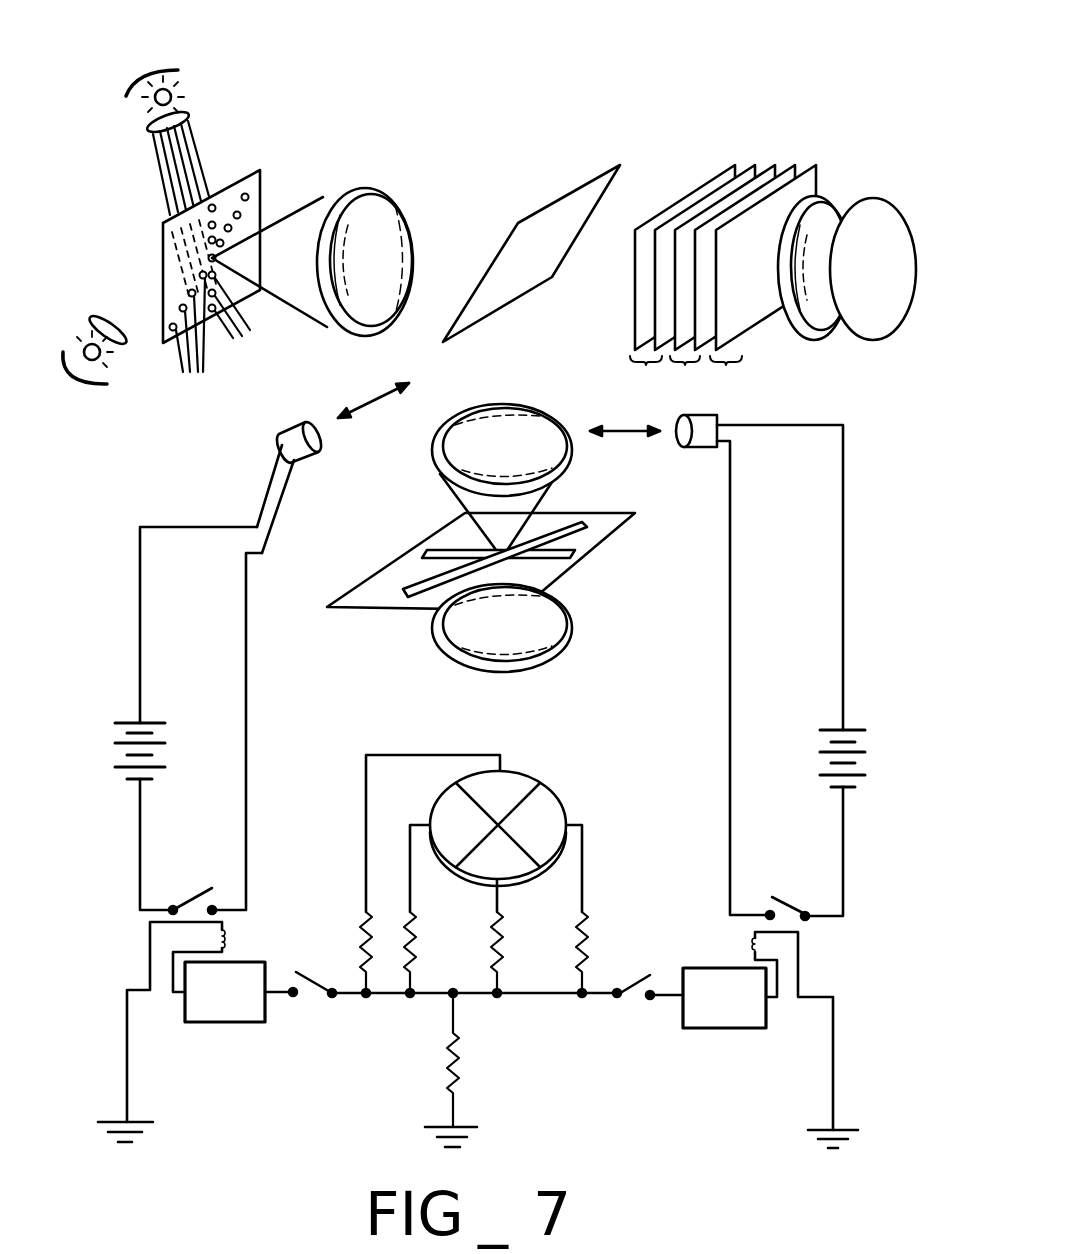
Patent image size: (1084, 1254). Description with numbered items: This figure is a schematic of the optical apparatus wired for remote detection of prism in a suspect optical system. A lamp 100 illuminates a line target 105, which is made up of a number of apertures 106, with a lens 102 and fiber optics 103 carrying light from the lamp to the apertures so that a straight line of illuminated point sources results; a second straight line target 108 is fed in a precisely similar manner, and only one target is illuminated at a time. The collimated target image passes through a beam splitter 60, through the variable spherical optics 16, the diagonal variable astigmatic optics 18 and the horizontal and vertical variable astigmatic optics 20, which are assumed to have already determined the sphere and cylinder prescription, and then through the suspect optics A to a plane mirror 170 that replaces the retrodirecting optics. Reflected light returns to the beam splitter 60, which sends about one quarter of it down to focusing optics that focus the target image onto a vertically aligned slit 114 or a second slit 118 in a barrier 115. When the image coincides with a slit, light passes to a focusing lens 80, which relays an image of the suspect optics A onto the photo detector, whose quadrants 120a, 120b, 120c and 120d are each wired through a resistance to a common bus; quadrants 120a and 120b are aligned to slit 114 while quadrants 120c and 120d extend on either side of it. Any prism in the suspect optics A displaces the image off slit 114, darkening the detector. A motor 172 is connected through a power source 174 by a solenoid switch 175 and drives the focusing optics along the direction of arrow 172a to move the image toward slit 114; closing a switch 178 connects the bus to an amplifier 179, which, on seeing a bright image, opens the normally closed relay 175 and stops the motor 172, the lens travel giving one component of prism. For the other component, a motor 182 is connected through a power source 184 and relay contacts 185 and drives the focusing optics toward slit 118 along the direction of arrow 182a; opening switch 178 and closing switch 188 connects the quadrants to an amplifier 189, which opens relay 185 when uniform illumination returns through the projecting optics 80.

The lamp 100 is at (190, 82).
The lens 102 is at (190, 112).
The fiber optics 103 is at (197, 153).
The line target 105 is at (262, 186).
The apertures 106 is at (251, 318).
The straight line target 108 is at (196, 343).
The beam splitter 60 is at (556, 200).
The vertically aligned slit 114 is at (420, 557).
The slit 118 is at (440, 584).
The barrier 115 is at (538, 568).
The focusing lens 80 is at (438, 640).
The variable spherical optics 16 is at (692, 284).
The variable astigmatic optics (diagonal) 18 is at (722, 284).
The variable astigmatic optics (horizontal and vertical) 20 is at (755, 284).
The suspect optics A is at (824, 340).
The mirror 170 is at (883, 340).
The motor 172 is at (300, 452).
The direction of movement 172a is at (362, 406).
The power source 174 is at (130, 723).
The solenoid switch 175 is at (155, 1015).
The switch 178 is at (315, 985).
The amplifier 179 is at (185, 1023).
The motor 182 is at (722, 430).
The arrow 182a is at (630, 434).
The power source 184 is at (828, 730).
The relay contacts 185 is at (813, 1022).
The switch 188 is at (630, 1000).
The amplifier 189 is at (700, 968).
The quadrant 120a is at (447, 818).
The quadrant 120b is at (547, 818).
The quadrant 120c is at (501, 861).
The quadrant 120d is at (511, 785).